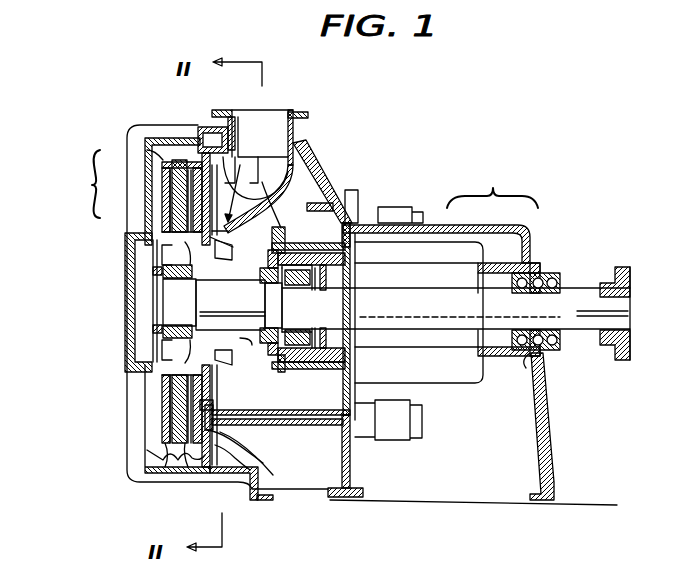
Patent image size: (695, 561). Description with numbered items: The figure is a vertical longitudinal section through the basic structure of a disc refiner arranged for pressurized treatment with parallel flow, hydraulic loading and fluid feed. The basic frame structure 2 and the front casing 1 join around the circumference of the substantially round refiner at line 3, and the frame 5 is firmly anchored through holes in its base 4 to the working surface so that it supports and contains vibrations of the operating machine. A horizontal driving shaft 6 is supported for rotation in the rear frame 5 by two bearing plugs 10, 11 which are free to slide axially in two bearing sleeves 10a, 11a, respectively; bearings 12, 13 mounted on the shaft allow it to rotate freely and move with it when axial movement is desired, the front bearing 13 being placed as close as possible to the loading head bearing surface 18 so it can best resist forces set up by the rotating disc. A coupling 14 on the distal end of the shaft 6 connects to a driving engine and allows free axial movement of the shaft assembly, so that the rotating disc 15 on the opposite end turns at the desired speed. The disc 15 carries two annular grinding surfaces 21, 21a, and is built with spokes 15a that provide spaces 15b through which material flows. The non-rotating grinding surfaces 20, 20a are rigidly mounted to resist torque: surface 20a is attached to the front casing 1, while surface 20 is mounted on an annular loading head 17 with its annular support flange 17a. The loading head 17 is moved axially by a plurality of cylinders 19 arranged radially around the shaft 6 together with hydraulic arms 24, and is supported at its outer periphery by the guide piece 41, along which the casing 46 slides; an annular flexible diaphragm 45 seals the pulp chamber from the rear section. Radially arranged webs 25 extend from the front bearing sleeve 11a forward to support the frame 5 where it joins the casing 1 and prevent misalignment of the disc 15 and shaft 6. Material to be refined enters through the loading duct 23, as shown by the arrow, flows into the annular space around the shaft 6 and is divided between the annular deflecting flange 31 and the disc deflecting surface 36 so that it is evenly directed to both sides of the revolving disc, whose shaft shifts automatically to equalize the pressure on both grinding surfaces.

The front casing 1 is at (141, 305).
The basic frame structure 2 is at (492, 185).
The line of union 3 is at (228, 491).
The base 4 is at (352, 499).
The frame 5 is at (497, 228).
The driving shaft 6 is at (418, 302).
The bearing plug 10 is at (530, 280).
The bearing sleeve 10a is at (500, 265).
The bearing plug 11 is at (292, 369).
The front bearing sleeve 11a is at (303, 252).
The bearing 12 is at (545, 368).
The front bearing 13 is at (320, 369).
The coupling 14 is at (620, 268).
The rotating disc 15 is at (170, 470).
The spokes 15a is at (233, 236).
The spaces 15b is at (133, 250).
The loading head 17 is at (205, 399).
The annular support flange 17a is at (232, 367).
The loading head shaft bearing surface 18 is at (243, 342).
The cylinders 19 is at (395, 212).
The non-rotating grinding surface 20 is at (240, 453).
The non-rotating grinding surface 20a is at (155, 428).
The annular grinding surface 21 is at (185, 470).
The annular grinding surface 21a is at (150, 470).
The loading duct 23 is at (280, 118).
The hydraulic arms 24 is at (312, 421).
The webs 25 is at (312, 190).
The annular deflecting flange 31 is at (396, 304).
The disc deflecting surface 36 is at (155, 266).
The guide piece 41 is at (250, 473).
The flexible diaphragm 45 is at (205, 140).
The casing 46 is at (245, 462).